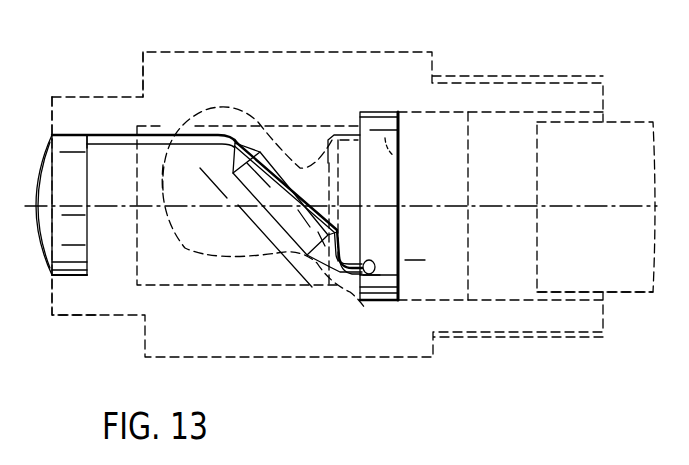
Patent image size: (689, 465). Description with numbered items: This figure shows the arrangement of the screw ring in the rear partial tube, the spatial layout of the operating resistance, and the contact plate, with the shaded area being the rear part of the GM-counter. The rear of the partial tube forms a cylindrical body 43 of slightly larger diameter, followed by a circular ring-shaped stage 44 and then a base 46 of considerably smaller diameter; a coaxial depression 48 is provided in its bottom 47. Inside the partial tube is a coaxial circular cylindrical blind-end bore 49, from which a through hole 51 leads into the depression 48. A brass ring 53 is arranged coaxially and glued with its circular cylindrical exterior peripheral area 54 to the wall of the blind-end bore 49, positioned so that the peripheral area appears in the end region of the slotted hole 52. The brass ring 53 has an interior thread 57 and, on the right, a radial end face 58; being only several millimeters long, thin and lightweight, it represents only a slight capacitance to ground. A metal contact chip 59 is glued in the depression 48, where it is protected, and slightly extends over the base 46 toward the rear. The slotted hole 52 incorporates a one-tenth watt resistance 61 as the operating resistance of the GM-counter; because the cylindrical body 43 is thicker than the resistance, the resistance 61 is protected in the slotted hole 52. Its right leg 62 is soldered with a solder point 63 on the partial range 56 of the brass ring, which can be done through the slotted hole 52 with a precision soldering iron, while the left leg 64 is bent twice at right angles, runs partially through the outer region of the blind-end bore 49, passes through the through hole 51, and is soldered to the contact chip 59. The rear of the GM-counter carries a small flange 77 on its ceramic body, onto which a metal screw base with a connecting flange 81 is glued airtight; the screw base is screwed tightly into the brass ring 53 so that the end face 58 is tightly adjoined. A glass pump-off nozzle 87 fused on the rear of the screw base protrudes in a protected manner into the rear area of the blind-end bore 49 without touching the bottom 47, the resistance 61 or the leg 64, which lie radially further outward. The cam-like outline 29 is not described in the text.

The cam disc 29 is at (180, 240).
The cylindrical body 43 is at (272, 55).
The circular ring-shaped stage 44 is at (143, 70).
The base 46 is at (83, 96).
The bottom 47 is at (78, 290).
The depression 48 is at (63, 130).
The blind-end bore 49 is at (218, 287).
The through hole 51 is at (95, 155).
The slotted hole 52 is at (292, 156).
The brass ring 53 is at (398, 130).
The exterior peripheral area 54 is at (387, 302).
The partial range 56 is at (384, 266).
The interior thread 57 is at (398, 158).
The radial end face 58 is at (400, 290).
The metal contact chip 59 is at (62, 228).
The resistance 61 is at (282, 221).
The right leg 62 is at (318, 296).
The solder point 63 is at (372, 259).
The left leg 64 is at (167, 136).
The flange 77 is at (525, 251).
The connecting flange 81 is at (451, 253).
The pump-off nozzle 87 is at (187, 173).